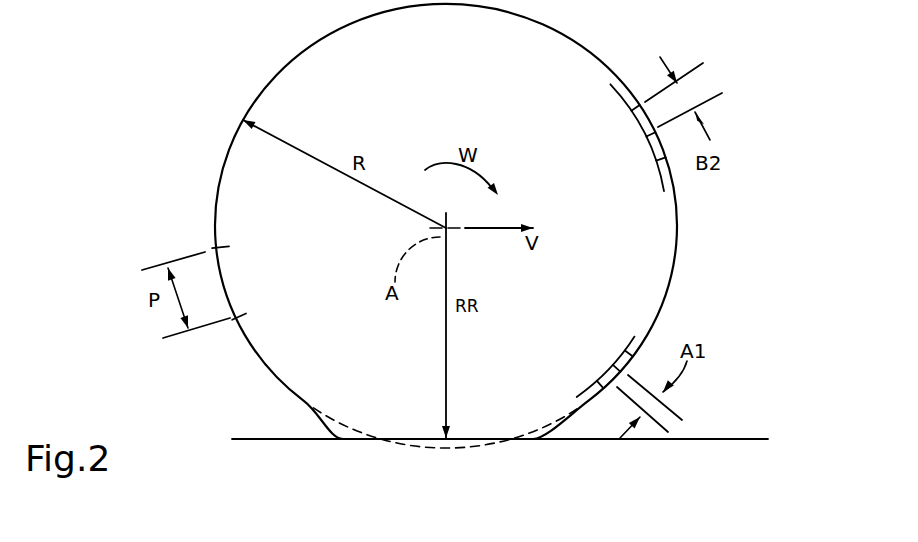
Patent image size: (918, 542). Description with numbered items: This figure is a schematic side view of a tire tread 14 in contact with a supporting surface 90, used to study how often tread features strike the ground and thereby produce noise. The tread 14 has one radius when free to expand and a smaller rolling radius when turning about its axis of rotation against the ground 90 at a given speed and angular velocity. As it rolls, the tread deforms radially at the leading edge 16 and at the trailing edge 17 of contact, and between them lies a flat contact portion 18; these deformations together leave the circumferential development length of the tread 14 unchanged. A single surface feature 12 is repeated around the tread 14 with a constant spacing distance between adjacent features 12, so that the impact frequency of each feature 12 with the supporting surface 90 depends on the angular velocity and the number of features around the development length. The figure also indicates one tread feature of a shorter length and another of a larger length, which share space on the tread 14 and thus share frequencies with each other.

The surface feature 12 is at (216, 240).
The tire tread 14 is at (562, 32).
The leading edge 16 is at (543, 438).
The trailing edge 17 is at (343, 438).
The flat contact portion 18 is at (468, 446).
The supporting surface 90 is at (757, 440).